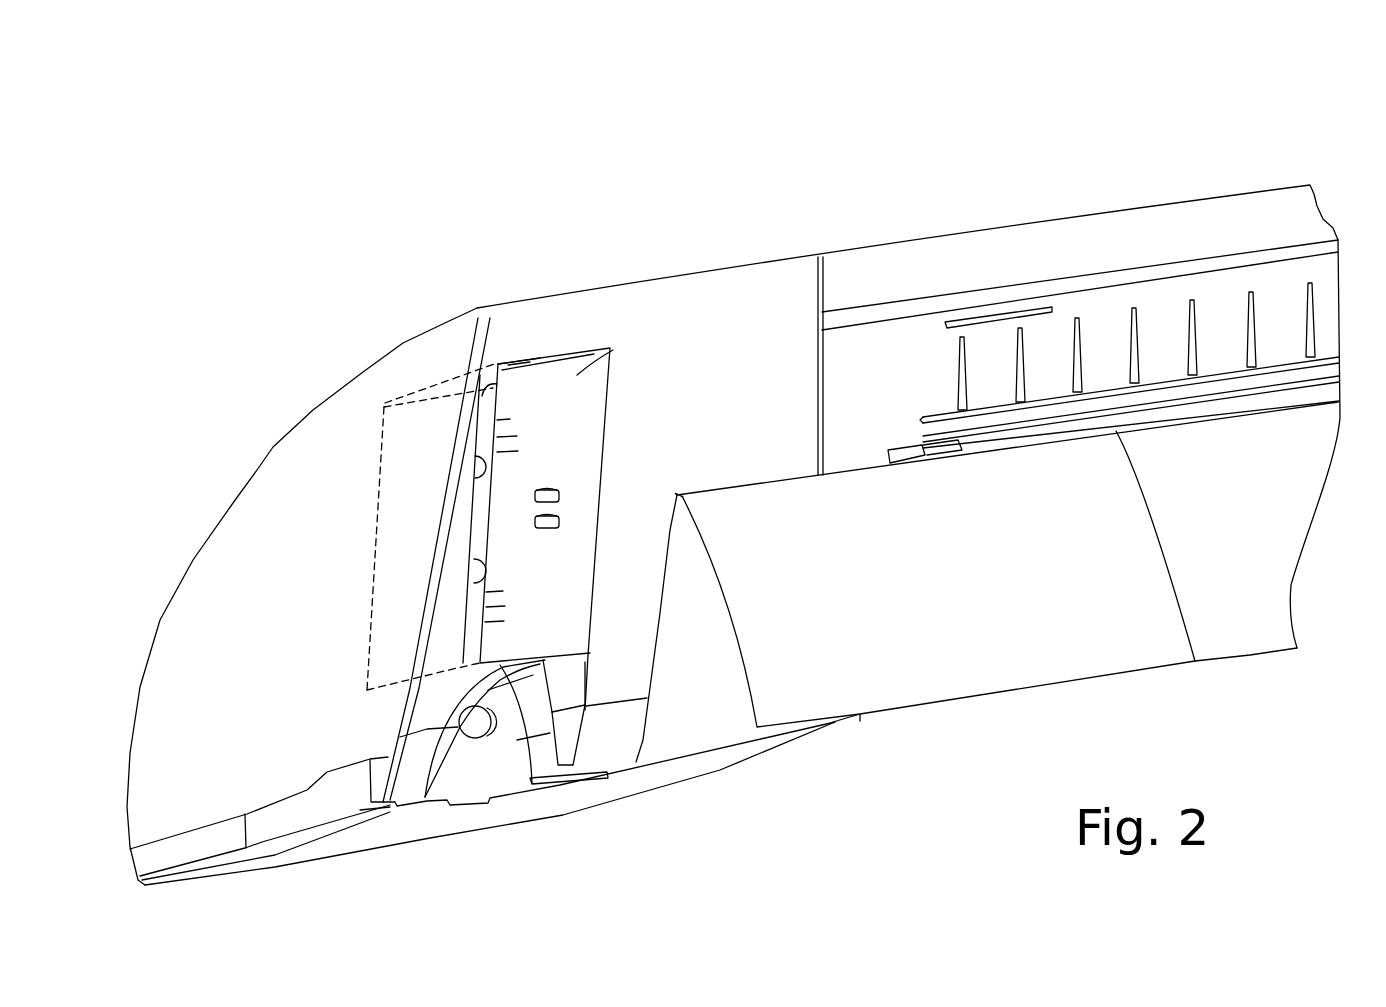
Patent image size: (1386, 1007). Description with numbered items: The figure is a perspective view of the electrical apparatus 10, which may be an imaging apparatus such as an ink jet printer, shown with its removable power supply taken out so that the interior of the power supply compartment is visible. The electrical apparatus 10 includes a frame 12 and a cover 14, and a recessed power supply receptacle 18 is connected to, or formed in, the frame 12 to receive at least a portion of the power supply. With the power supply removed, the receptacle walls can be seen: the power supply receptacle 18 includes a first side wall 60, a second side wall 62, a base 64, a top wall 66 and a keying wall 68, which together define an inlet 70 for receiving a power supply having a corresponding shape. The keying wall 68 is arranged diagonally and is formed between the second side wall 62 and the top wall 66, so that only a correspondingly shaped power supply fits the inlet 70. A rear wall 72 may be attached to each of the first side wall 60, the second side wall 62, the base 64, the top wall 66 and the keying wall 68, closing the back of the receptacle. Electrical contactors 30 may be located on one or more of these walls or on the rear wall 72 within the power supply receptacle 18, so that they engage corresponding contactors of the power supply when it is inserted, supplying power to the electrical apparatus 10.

The electrical apparatus 10 is at (932, 172).
The frame 12 is at (707, 337).
The cover 14 is at (273, 450).
The power supply receptacle 18 is at (514, 345).
The electrical contactors 30 is at (560, 520).
The first side wall 60 is at (610, 350).
The second side wall 62 is at (483, 478).
The base 64 is at (425, 800).
The top wall 66 is at (532, 362).
The keying wall 68 is at (497, 384).
The inlet 70 is at (562, 590).
The rear wall 72 is at (484, 582).